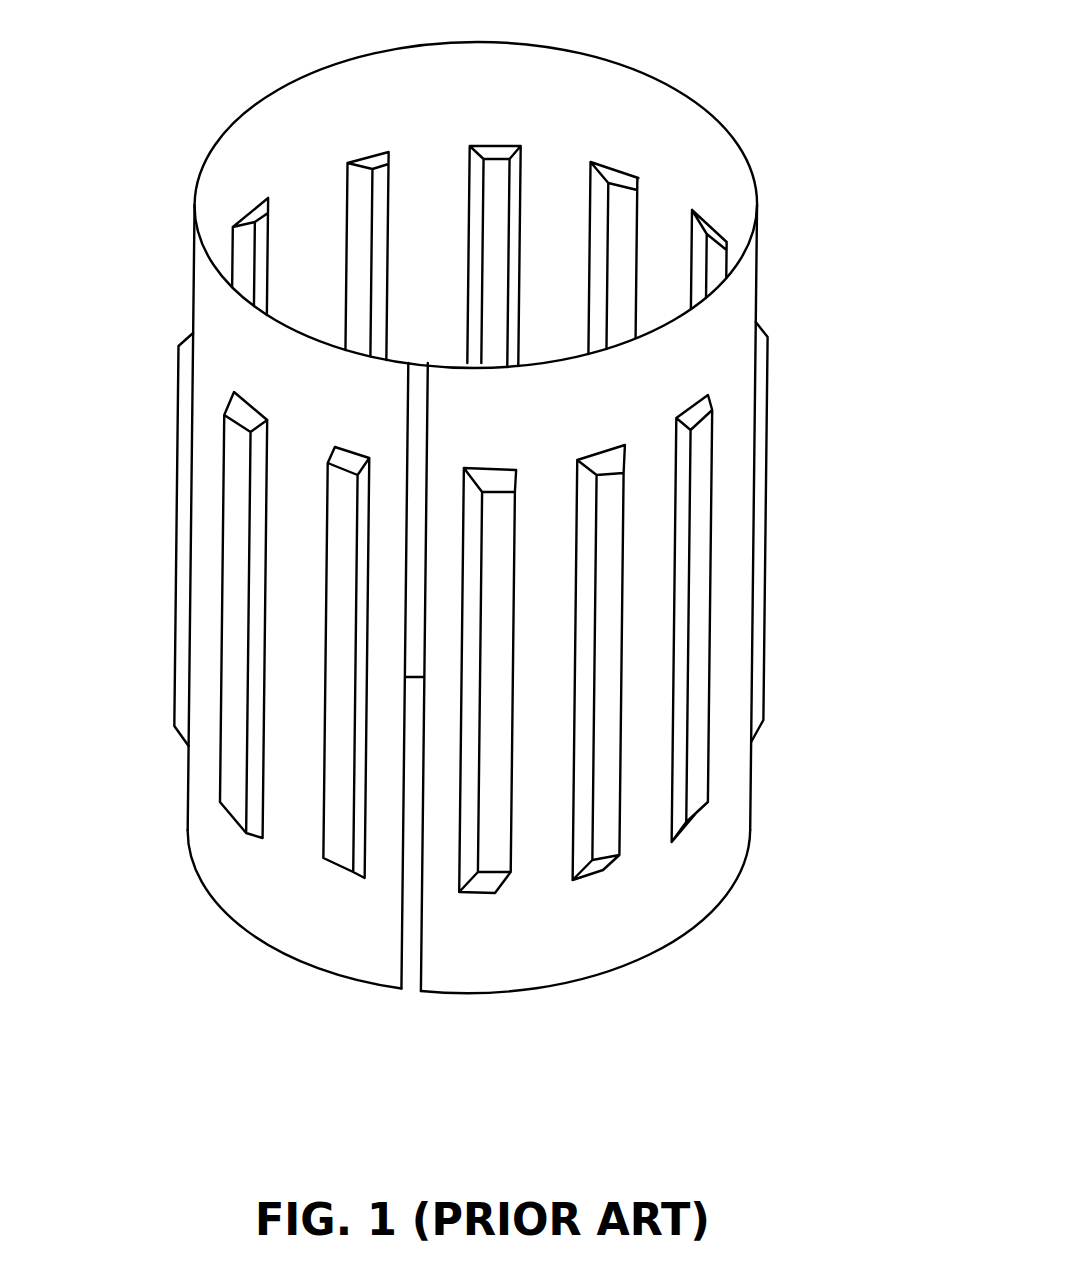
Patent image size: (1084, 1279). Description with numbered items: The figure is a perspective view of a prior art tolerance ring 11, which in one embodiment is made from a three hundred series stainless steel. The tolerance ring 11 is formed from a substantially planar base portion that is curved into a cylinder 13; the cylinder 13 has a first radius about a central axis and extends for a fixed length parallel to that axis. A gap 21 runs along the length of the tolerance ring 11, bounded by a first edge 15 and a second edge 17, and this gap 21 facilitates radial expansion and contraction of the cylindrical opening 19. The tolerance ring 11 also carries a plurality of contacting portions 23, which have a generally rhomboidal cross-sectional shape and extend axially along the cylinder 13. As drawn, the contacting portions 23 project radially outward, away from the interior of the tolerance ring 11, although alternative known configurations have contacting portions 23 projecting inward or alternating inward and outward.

The tolerance ring 11 is at (792, 110).
The cylinder 13 is at (715, 352).
The first edge 15 is at (373, 955).
The second edge 17 is at (448, 957).
The cylindrical opening 19 is at (328, 133).
The gap 21 is at (413, 893).
The contacting portions 23 is at (233, 480).